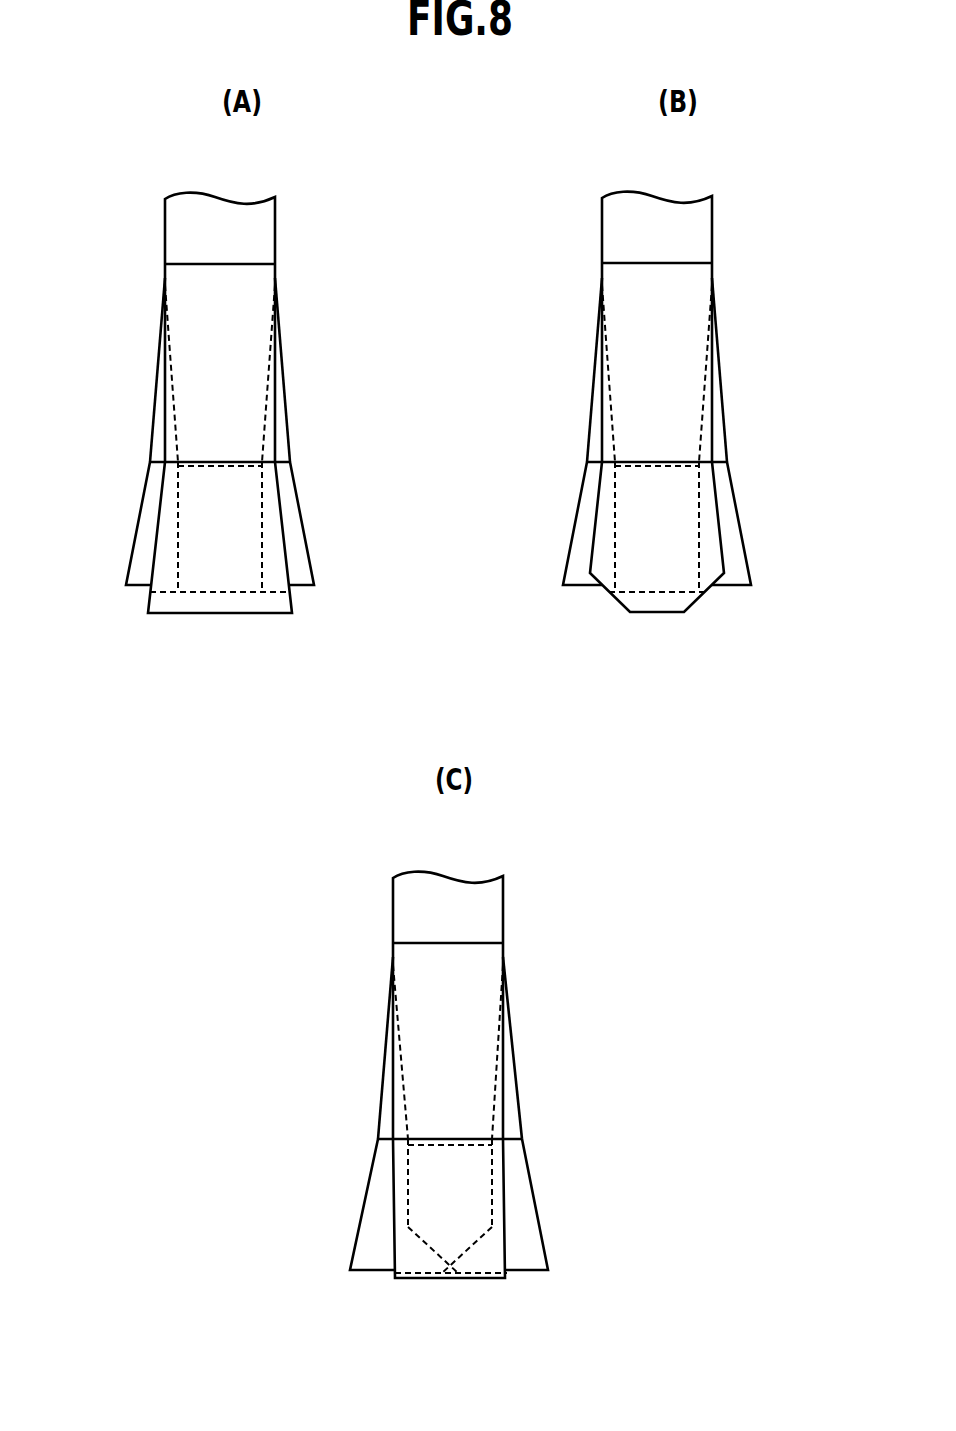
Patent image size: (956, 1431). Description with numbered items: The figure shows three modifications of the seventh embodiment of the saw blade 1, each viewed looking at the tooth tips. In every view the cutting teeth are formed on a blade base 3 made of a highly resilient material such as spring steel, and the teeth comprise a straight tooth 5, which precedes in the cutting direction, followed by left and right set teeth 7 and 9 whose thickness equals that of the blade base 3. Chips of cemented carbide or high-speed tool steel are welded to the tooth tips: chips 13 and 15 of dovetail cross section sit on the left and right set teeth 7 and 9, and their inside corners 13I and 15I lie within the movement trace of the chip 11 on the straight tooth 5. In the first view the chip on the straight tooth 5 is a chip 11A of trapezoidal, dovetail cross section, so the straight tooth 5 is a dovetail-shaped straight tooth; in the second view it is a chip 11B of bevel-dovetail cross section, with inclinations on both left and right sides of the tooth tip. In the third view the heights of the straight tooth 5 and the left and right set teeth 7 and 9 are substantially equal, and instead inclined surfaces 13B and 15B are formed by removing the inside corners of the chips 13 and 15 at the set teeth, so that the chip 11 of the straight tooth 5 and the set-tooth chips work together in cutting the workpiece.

The saw blade 1 is at (323, 196).
The blade base 3 is at (185, 222).
The straight tooth 5 is at (246, 320).
The left set tooth 7 is at (161, 400).
The right set tooth 9 is at (288, 406).
The chip on tooth tip 11 is at (497, 1245).
The chip on tooth tip 11A is at (222, 600).
The chip on tooth tip 11B is at (660, 601).
The chip on tooth tip 13 is at (147, 520).
The chip on tooth tip 15 is at (297, 508).
The inside corner 13I is at (261, 593).
The inside corner 15I is at (179, 593).
The inclined surface 13B is at (470, 1248).
The inclined surface 15B is at (432, 1247).